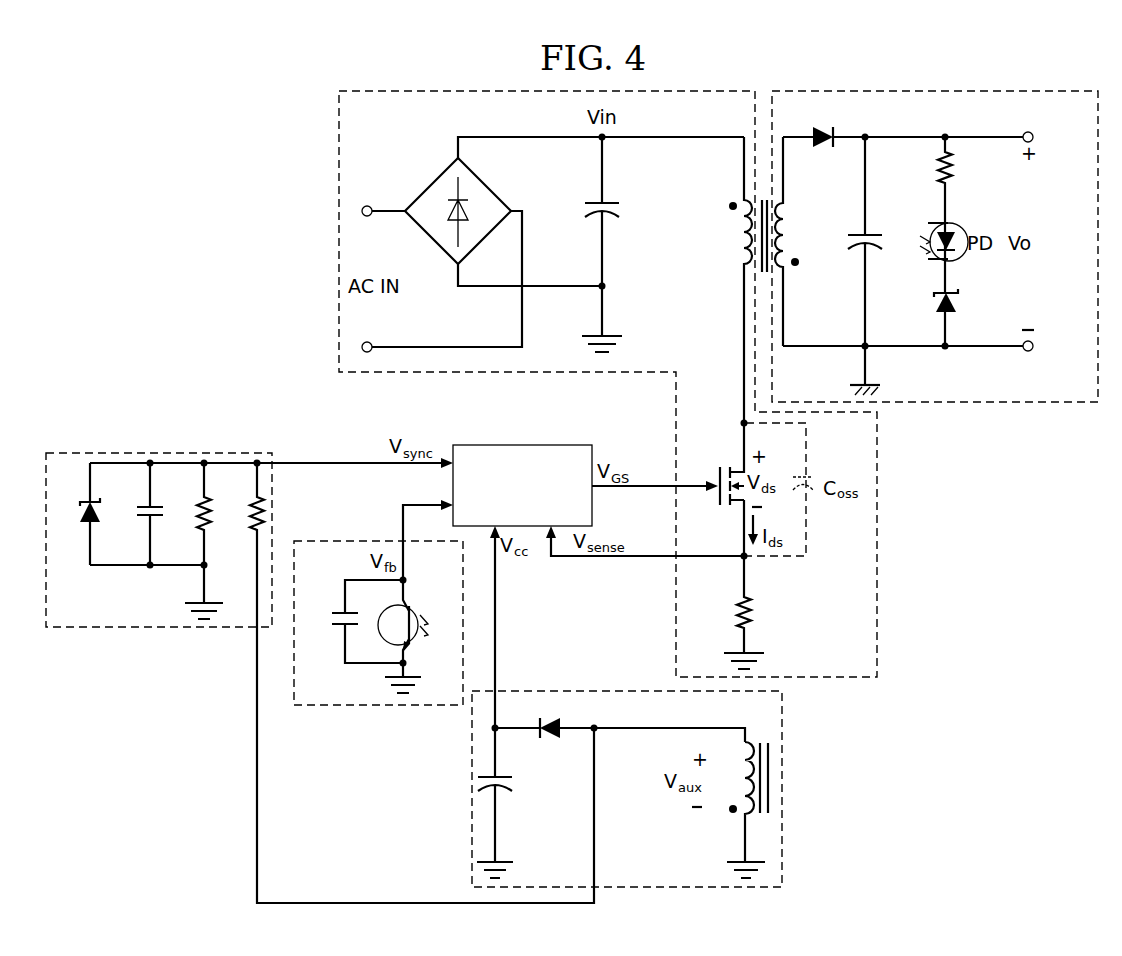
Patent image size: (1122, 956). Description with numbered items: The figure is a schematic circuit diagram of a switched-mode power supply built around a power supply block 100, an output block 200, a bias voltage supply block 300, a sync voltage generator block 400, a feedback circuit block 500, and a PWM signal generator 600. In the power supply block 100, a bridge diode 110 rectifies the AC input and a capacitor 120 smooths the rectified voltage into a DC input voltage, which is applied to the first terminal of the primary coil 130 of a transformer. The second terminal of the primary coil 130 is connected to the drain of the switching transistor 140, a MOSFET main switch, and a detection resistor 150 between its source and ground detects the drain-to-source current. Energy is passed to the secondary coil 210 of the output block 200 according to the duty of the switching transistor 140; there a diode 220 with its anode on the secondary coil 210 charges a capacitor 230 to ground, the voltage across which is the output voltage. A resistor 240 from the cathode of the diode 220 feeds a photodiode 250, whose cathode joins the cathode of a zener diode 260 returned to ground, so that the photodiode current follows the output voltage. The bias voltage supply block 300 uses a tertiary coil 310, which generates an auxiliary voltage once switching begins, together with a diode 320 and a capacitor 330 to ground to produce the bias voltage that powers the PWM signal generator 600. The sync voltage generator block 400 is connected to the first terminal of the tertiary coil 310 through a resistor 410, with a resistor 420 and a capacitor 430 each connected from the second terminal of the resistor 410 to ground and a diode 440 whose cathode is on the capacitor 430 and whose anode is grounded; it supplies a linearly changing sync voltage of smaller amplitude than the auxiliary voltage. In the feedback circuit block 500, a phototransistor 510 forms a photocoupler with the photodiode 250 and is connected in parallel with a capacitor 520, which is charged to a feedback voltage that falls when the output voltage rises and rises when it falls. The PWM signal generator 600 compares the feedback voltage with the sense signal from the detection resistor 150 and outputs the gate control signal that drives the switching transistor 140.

The power supply block 100 is at (339, 166).
The bridge diode 110 is at (432, 176).
The capacitor 120 is at (612, 203).
The primary coil 130 is at (744, 252).
The switching transistor 140 is at (728, 465).
The detection resistor 150 is at (750, 601).
The output block 200 is at (1013, 404).
The secondary coil 210 is at (808, 198).
The diode 220 is at (833, 128).
The capacitor 230 is at (872, 235).
The resistor 240 is at (950, 180).
The photodiode 250 is at (965, 256).
The zener diode 260 is at (935, 300).
The bias voltage supply block 300 is at (783, 742).
The tertiary coil 310 is at (740, 760).
The diode 320 is at (562, 717).
The capacitor 330 is at (502, 790).
The sync voltage generator block 400 is at (128, 453).
The resistor 410 is at (253, 498).
The resistor 420 is at (200, 498).
The capacitor 430 is at (136, 516).
The diode 440 is at (85, 522).
The feedback circuit block 500 is at (405, 705).
The phototransistor 510 is at (413, 603).
The capacitor 520 is at (345, 628).
The PWM signal generator 600 is at (497, 445).